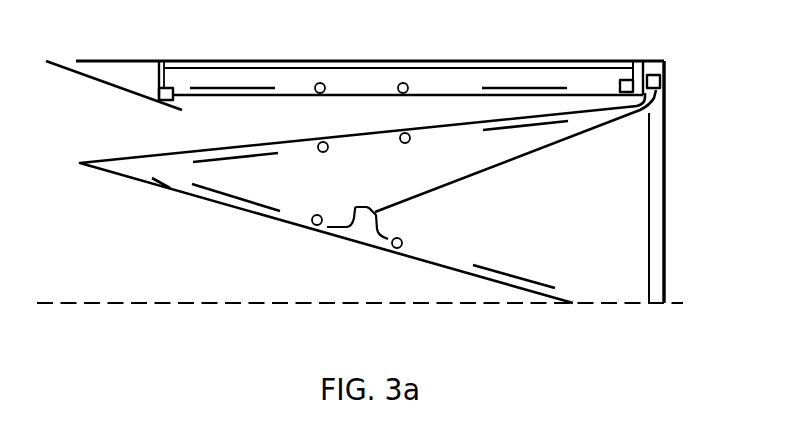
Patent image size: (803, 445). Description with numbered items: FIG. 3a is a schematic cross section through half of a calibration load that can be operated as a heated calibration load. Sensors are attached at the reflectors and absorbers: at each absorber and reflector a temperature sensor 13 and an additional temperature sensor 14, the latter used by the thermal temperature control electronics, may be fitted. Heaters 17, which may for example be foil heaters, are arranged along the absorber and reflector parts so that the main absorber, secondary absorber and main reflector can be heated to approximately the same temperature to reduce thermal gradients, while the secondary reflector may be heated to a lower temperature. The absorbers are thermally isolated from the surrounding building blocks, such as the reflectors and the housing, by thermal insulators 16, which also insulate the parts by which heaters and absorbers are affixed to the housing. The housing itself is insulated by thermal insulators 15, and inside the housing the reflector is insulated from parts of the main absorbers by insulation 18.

The temperature sensor 13 is at (403, 82).
The additional temperature sensor 14 is at (320, 82).
The thermal insulator 15 is at (503, 68).
The thermal insulator 16 is at (167, 88).
The heater 17 is at (243, 88).
The insulation 18 is at (610, 123).